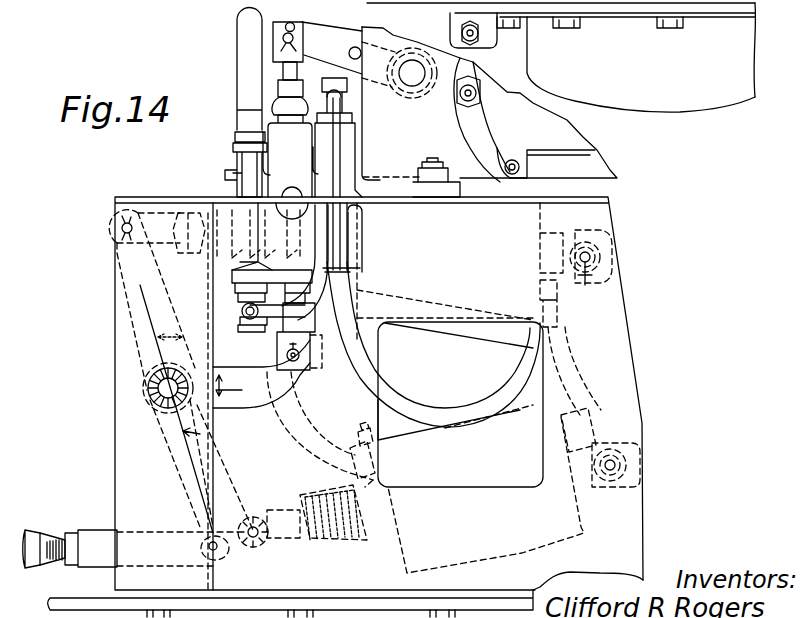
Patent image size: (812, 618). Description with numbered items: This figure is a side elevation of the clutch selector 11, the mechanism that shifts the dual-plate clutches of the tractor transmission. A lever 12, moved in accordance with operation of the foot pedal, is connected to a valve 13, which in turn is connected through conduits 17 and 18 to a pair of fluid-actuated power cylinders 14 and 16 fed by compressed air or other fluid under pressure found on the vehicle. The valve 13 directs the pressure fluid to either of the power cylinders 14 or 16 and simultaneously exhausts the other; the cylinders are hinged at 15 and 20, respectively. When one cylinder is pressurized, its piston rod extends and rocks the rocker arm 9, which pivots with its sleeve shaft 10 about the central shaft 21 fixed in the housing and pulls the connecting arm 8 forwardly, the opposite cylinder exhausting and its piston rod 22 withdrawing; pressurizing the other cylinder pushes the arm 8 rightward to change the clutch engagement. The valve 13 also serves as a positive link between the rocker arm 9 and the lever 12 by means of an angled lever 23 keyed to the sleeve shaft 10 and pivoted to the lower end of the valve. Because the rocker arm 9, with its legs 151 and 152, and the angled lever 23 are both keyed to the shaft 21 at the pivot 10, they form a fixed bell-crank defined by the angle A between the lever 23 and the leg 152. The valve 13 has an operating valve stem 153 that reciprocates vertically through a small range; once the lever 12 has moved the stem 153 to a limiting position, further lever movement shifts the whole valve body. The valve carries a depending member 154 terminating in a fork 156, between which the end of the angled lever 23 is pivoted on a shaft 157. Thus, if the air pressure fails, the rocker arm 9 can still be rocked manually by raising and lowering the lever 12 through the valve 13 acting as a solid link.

The connecting arm 8 is at (36, 534).
The rocker arm 9 is at (120, 297).
The sleeve shaft 10 is at (215, 416).
The clutch selector 11 is at (575, 142).
The lever 12 is at (338, 40).
The valve 13 is at (250, 174).
The power cylinder 14 is at (552, 219).
The hinge 15 is at (586, 290).
The power cylinder 16 is at (586, 528).
The conduit 17 is at (392, 396).
The conduit 18 is at (240, 33).
The hinge 20 is at (594, 407).
The central shaft 21 is at (147, 389).
The piston rod 22 is at (278, 546).
The angled lever 23 is at (240, 406).
The leg of rocker arm 151 is at (240, 480).
The leg of rocker arm 152 is at (135, 338).
The valve operating stem 153 is at (262, 77).
The depending member 154 is at (248, 308).
The fork 156 is at (316, 350).
The shaft 157 is at (286, 354).